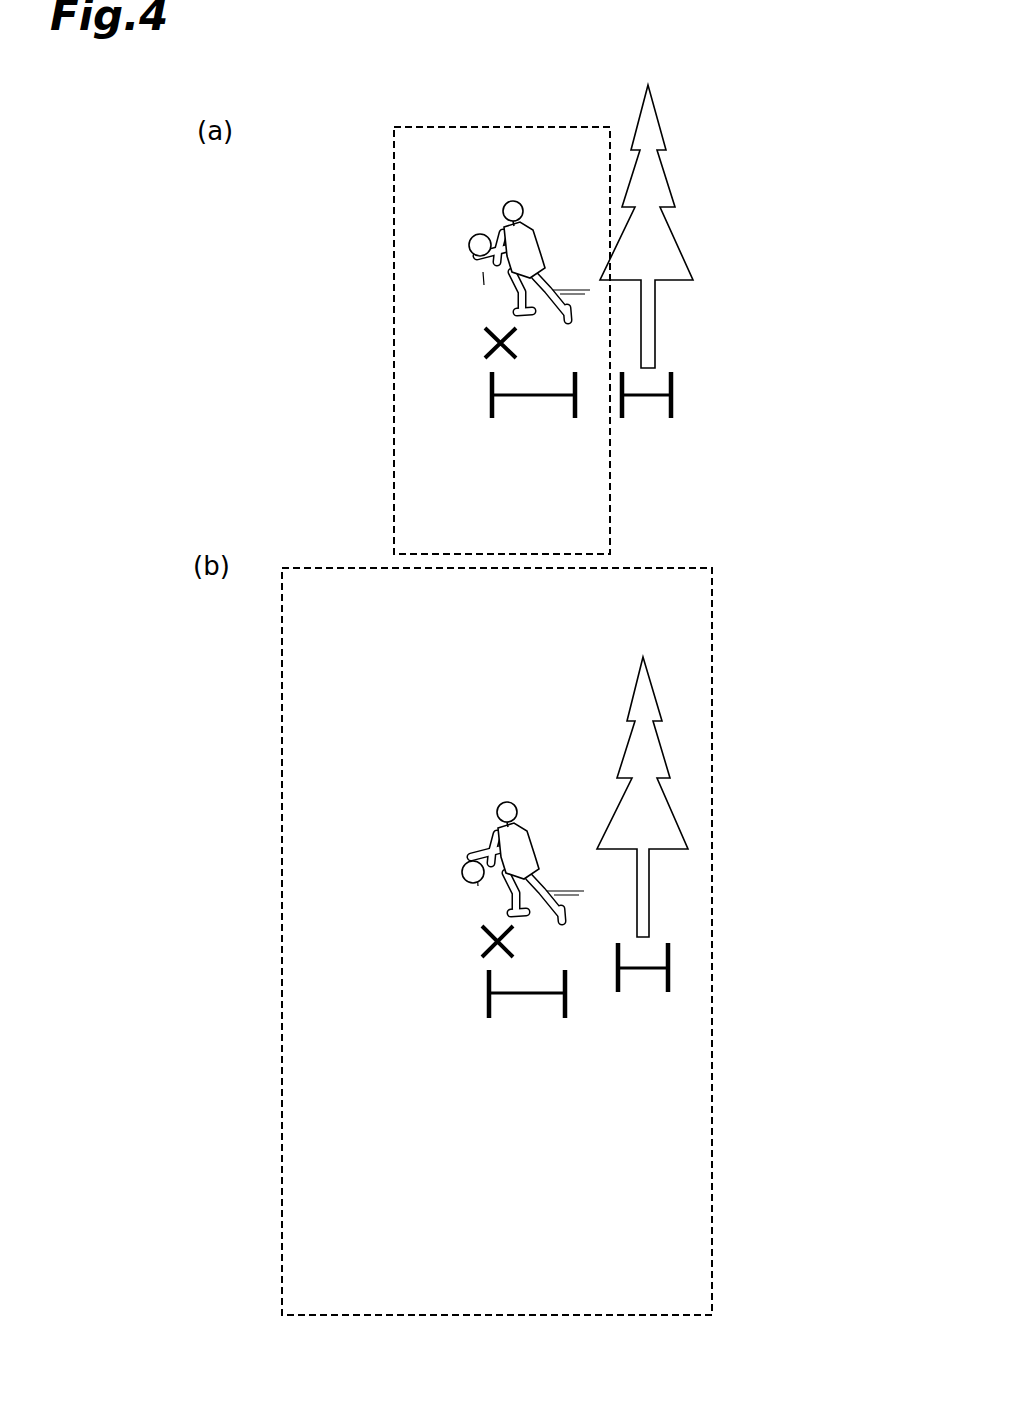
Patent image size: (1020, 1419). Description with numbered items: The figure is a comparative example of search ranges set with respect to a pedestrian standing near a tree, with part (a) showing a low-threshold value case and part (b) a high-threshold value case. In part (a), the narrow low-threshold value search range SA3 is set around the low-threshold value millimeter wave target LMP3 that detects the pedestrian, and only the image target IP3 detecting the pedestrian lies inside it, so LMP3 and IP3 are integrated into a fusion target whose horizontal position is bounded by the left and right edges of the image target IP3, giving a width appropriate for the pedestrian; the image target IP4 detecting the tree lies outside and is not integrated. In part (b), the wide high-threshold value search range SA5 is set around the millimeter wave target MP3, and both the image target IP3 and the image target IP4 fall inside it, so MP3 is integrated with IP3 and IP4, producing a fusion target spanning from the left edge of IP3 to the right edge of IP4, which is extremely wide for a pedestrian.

The low-threshold value search range SA3 is at (394, 168).
The high-threshold value search range SA5 is at (283, 677).
The low-threshold value millimeter wave target LMP3 is at (487, 346).
The millimeter wave target MP3 is at (486, 944).
The image target IP3 is at (492, 382).
The image target IP4 is at (672, 408).